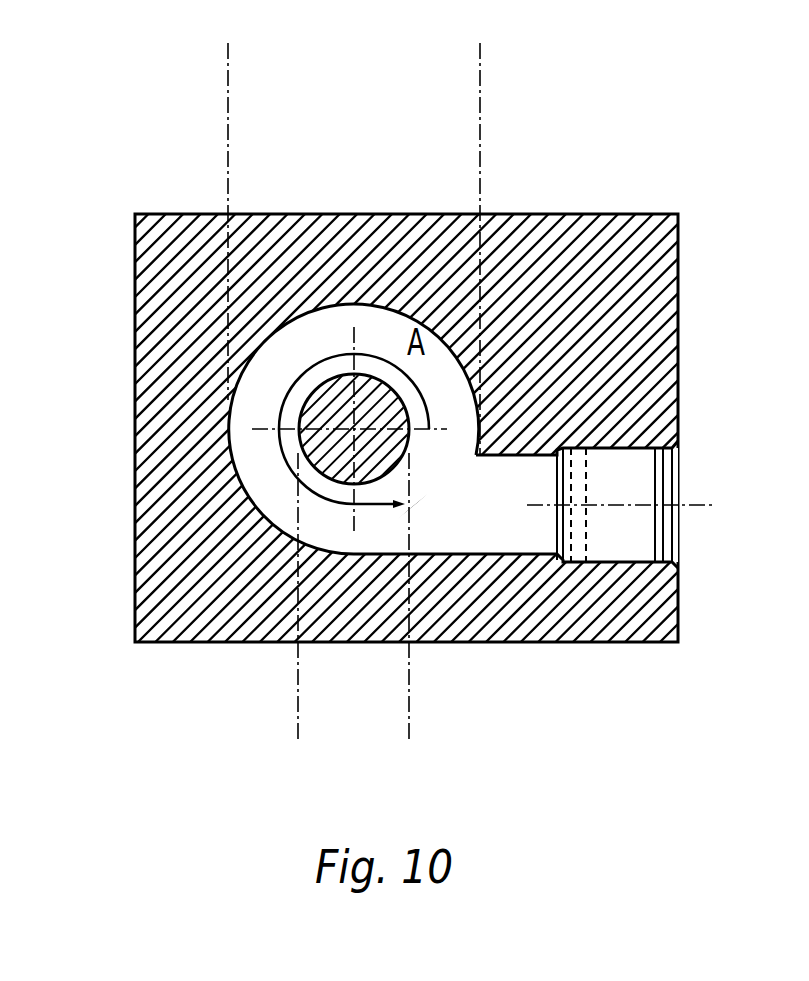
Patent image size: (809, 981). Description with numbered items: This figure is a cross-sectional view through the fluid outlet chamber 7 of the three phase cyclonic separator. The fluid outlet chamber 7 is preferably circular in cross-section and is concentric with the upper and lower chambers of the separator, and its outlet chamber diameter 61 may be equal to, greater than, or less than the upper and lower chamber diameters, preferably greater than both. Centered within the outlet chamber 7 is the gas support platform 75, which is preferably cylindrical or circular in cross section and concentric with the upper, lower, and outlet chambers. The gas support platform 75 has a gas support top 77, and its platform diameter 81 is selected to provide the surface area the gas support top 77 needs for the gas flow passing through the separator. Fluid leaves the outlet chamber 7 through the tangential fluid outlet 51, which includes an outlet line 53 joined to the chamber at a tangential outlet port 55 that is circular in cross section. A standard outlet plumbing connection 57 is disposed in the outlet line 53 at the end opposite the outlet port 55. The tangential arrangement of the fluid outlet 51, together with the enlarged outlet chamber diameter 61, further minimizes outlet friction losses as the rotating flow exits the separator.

The fluid outlet chamber 7 is at (256, 462).
The fluid outlet 51 is at (499, 560).
The outlet line 53 is at (517, 518).
The tangential outlet port 55 is at (430, 513).
The standard outlet plumbing connection 57 is at (632, 482).
The outlet chamber diameter 61 is at (480, 102).
The gas support platform 75 is at (315, 391).
The gas support top 77 is at (282, 421).
The platform diameter 81 is at (409, 702).